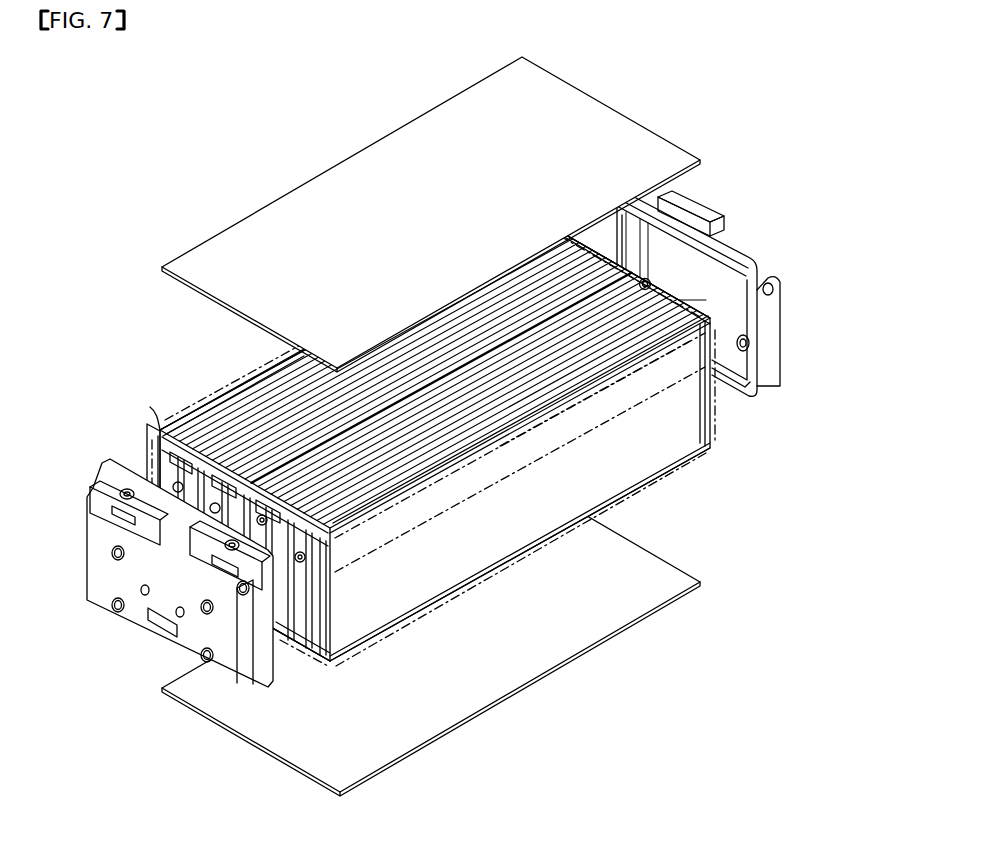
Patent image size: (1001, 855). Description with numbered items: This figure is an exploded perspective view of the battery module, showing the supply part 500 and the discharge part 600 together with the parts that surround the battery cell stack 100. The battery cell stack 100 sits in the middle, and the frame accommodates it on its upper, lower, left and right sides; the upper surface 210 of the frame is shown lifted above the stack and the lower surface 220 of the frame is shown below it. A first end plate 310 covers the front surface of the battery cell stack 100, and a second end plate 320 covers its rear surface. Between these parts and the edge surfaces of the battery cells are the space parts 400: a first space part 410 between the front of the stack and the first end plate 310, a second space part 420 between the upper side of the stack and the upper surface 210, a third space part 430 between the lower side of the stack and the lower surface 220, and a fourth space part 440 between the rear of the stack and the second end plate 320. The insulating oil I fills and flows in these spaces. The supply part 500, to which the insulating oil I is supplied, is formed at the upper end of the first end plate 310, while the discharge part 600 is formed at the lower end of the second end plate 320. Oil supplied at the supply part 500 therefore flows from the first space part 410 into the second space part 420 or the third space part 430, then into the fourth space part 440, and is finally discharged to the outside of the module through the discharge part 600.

The battery cell stack 100 is at (226, 409).
The upper surface of the frame 210 is at (290, 218).
The lower surface of the frame 220 is at (293, 732).
The first end plate 310 is at (138, 614).
The second end plate 320 is at (724, 238).
The space parts 400 is at (448, 525).
The first space part 410 is at (287, 657).
The second space part 420 is at (320, 378).
The third space part 430 is at (528, 573).
The fourth space part 440 is at (730, 414).
The supply part 500 is at (200, 562).
The discharge part 600 is at (651, 283).
The insulating oil I is at (150, 407).